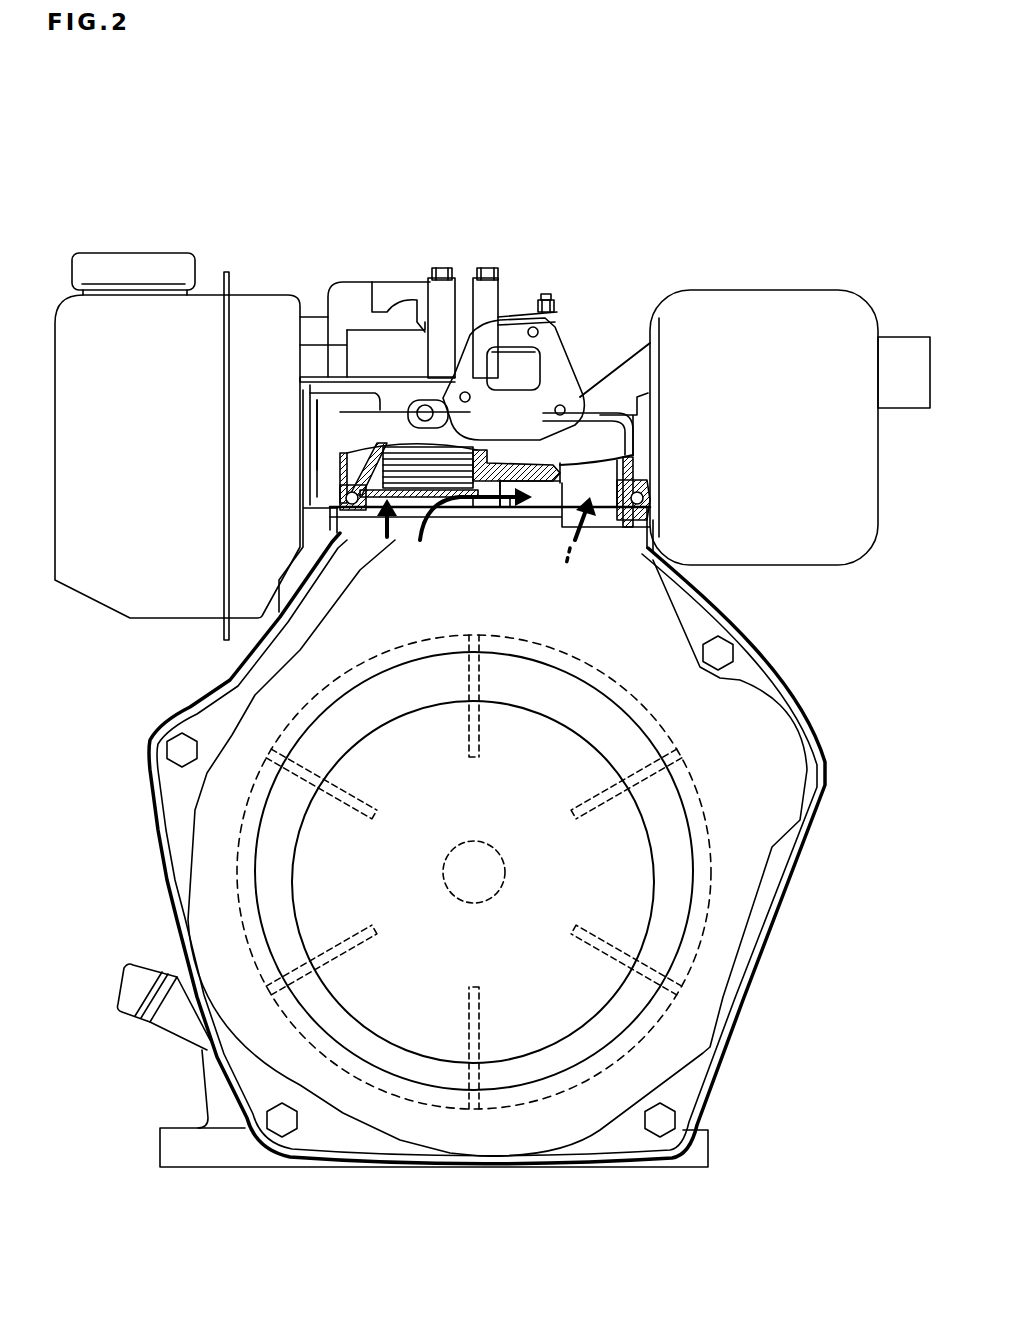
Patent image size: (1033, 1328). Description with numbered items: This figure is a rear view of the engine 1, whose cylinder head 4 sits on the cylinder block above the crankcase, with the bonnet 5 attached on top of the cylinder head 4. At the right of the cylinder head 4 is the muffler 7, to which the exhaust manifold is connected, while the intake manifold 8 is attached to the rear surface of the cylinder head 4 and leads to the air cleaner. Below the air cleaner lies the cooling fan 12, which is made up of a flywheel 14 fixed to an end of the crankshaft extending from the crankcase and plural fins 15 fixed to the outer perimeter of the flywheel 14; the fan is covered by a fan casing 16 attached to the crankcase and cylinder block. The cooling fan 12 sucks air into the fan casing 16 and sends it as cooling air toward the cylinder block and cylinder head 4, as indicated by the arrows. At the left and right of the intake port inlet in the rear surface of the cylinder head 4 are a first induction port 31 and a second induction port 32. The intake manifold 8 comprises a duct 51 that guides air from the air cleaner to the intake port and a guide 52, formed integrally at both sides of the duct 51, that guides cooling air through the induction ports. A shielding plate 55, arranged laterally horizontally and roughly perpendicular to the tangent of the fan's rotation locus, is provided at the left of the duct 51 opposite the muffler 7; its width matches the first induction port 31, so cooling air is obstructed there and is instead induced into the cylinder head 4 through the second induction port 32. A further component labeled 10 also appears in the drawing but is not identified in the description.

The engine 1 is at (473, 141).
The cylinder head 4 is at (330, 377).
The bonnet 5 is at (370, 282).
The muffler 7 is at (728, 292).
The intake manifold 8 is at (567, 359).
The fuel tank 10 is at (258, 294).
The cooling fan 12 is at (716, 919).
The flywheel 14 is at (237, 893).
The fins 15 is at (513, 1108).
The fan casing 16 is at (678, 610).
The first induction port 31 is at (365, 518).
The second induction port 32 is at (598, 488).
The duct 51 is at (600, 390).
The guide 52 is at (515, 507).
The shielding plate 55 is at (388, 545).